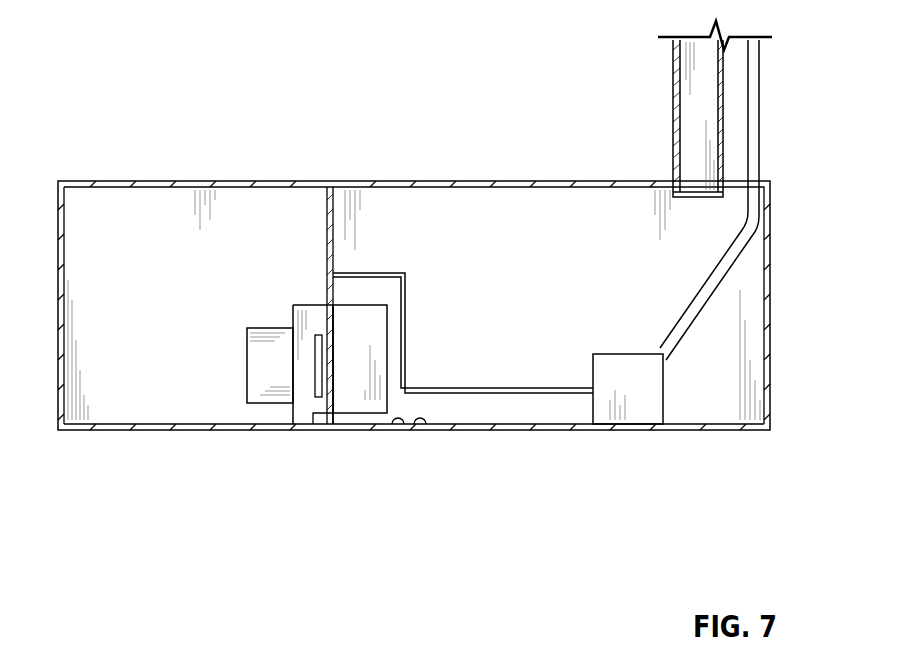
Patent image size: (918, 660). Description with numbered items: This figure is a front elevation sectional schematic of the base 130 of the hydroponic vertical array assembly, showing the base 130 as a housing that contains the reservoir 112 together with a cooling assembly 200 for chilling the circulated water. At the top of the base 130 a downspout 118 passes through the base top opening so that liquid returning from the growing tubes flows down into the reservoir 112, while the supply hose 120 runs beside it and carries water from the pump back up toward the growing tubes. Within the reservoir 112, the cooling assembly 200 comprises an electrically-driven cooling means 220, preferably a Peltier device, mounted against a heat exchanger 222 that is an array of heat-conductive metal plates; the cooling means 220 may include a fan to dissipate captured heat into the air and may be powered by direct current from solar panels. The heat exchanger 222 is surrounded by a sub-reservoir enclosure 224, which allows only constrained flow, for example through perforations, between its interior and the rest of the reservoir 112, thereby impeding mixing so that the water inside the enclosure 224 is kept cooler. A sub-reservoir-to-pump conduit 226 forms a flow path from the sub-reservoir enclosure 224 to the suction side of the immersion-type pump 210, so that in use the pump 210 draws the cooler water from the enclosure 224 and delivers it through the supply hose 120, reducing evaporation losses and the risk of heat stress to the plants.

The base 130 is at (320, 88).
The reservoir 112 is at (505, 212).
The downspout 118 is at (673, 153).
The supply hose 120 is at (748, 120).
The cooling assembly 200 is at (238, 392).
The immersion-type pump 210 is at (648, 416).
The electrically-driven cooling means 220 is at (308, 422).
The heat exchanger 222 is at (345, 397).
The sub-reservoir enclosure 224 is at (405, 340).
The sub-reservoir-to-pump conduit 226 is at (537, 408).